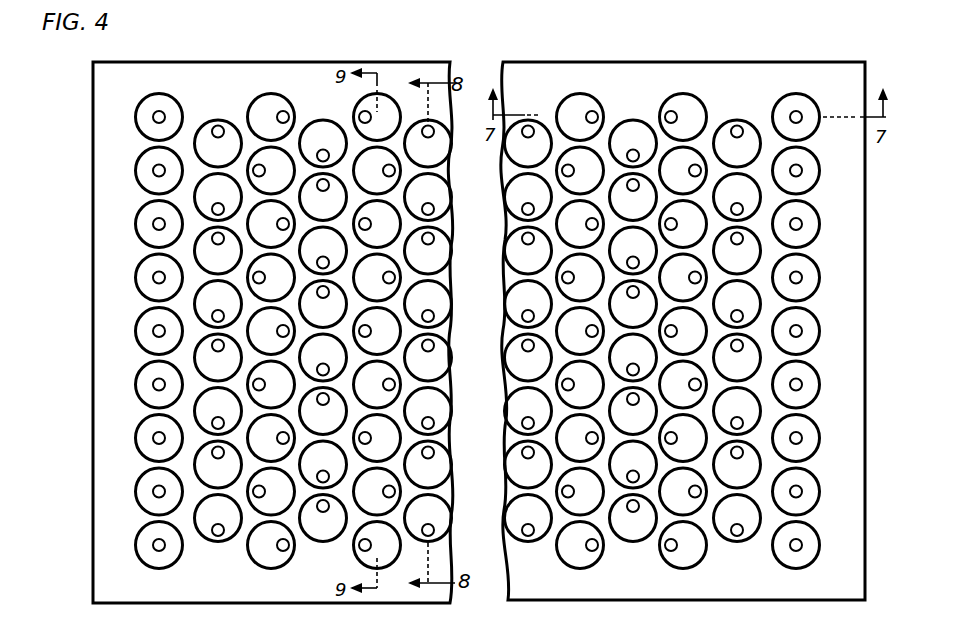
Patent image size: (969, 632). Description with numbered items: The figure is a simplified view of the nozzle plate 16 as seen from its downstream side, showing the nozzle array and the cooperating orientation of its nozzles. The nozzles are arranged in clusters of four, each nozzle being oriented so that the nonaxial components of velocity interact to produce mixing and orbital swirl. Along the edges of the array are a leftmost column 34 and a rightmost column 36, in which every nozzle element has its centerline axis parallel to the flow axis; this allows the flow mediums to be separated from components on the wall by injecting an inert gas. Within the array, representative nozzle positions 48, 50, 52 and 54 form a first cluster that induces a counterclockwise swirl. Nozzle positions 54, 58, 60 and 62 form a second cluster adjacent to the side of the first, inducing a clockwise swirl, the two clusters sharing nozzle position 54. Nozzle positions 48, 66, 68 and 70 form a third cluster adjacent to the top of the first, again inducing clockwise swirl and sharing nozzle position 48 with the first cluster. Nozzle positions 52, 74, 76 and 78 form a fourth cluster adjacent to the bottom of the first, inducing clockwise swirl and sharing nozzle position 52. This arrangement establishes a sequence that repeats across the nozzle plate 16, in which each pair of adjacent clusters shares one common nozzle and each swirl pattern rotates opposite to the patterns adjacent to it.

The leftmost column 34 is at (133, 100).
The nozzle plate 16 is at (642, 72).
The rightmost column 36 is at (812, 94).
The nozzle position 48 is at (271, 331).
The nozzle position 50 is at (218, 357).
The nozzle position 52 is at (271, 384).
The nozzle position 54 is at (323, 357).
The nozzle position 58 is at (377, 331).
The nozzle position 60 is at (428, 357).
The nozzle position 62 is at (377, 384).
The nozzle position 66 is at (218, 304).
The nozzle position 68 is at (271, 277).
The nozzle position 70 is at (323, 304).
The nozzle position 74 is at (323, 411).
The nozzle position 76 is at (271, 438).
The nozzle position 78 is at (218, 411).